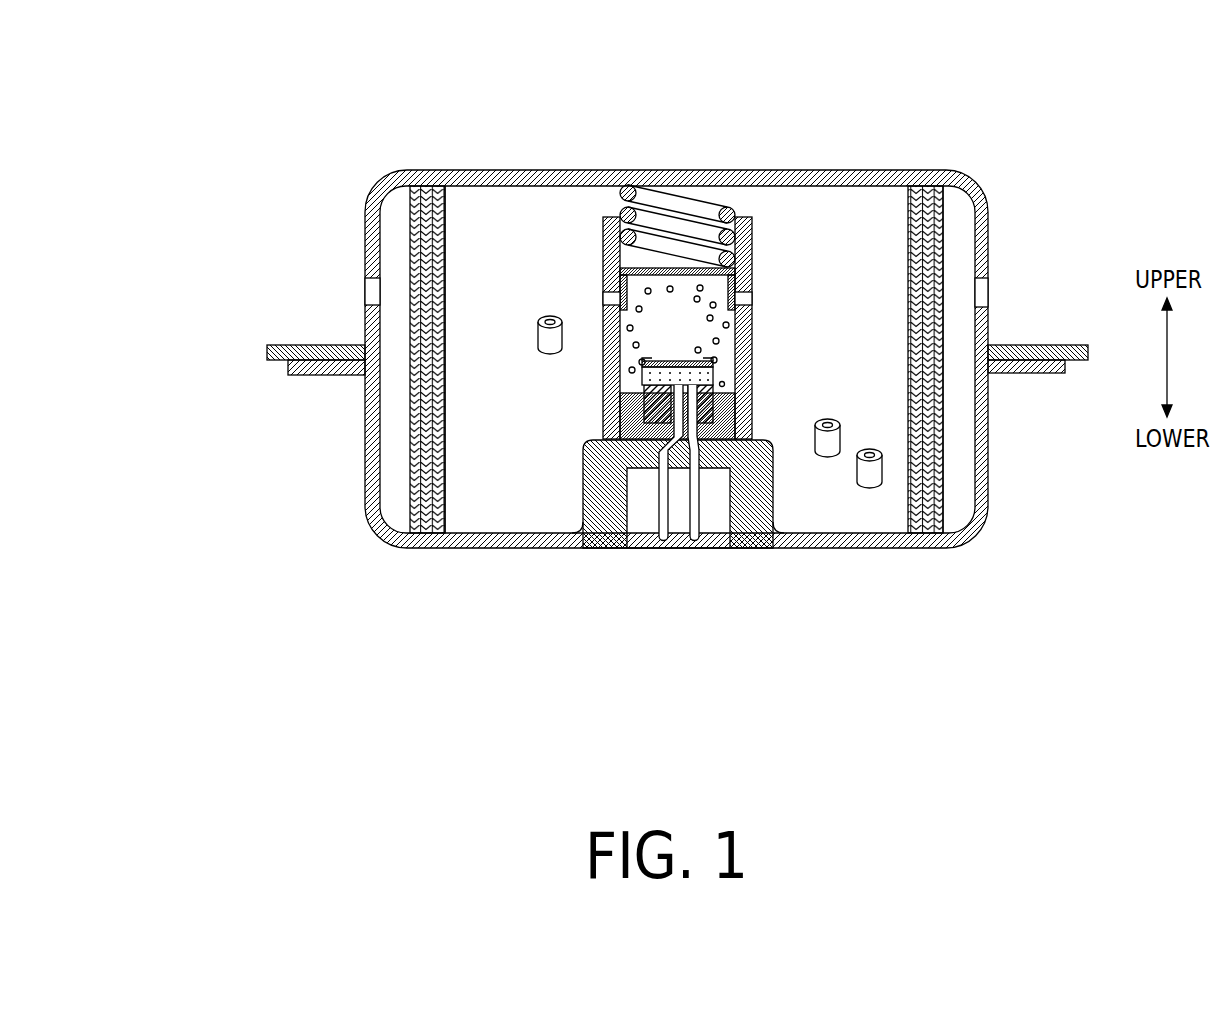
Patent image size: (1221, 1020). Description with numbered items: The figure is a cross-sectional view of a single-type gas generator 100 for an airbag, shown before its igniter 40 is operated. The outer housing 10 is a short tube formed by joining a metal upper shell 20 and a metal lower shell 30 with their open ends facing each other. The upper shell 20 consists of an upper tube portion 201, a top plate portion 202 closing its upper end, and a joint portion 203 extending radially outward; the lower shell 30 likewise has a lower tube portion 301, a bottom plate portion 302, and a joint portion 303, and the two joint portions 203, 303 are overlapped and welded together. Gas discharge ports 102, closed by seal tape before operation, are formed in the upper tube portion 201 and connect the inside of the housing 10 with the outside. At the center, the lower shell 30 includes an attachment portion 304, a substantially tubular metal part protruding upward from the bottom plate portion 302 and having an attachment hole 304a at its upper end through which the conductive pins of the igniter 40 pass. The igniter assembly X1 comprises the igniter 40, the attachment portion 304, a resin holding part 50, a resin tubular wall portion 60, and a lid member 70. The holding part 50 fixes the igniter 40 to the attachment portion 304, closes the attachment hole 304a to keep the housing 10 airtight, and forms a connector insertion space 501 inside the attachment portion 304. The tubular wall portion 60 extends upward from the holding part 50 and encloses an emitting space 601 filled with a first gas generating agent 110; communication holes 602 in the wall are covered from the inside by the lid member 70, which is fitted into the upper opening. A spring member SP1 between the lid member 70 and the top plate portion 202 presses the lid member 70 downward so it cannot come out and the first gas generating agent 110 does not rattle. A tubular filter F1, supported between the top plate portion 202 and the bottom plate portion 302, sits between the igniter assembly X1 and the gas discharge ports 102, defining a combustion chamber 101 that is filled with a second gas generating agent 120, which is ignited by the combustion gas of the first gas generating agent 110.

The gas generator 100 is at (352, 120).
The housing 10 is at (170, 373).
The upper shell 20 is at (268, 369).
The lower shell 30 is at (336, 408).
The igniter 40 is at (716, 373).
The holding part 50 is at (754, 410).
The tubular wall portion 60 is at (752, 269).
The lid member 70 is at (605, 275).
The combustion chamber 101 is at (888, 246).
The gas discharge port 102 is at (366, 295).
The first gas generating agent 110 is at (753, 330).
The second gas generating agent 120 is at (538, 340).
The upper tube portion 201 is at (366, 247).
The top plate portion 202 is at (672, 171).
The joint portion 203 is at (1050, 345).
The lower tube portion 301 is at (366, 470).
The bottom plate portion 302 is at (535, 549).
The joint portion 303 is at (1048, 373).
The attachment portion 304 is at (583, 484).
The attachment hole 304a is at (603, 426).
The connector insertion space 501 is at (640, 538).
The emitting space 601 is at (697, 343).
The communication hole 602 is at (604, 298).
The filter F1 is at (445, 240).
The spring member SP1 is at (619, 194).
The igniter assembly X1 is at (579, 402).